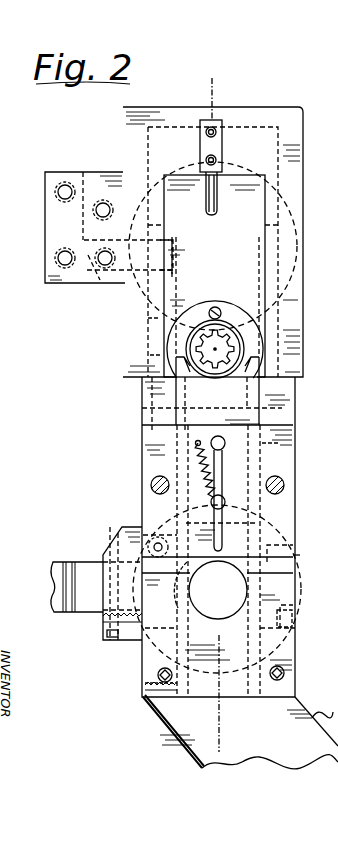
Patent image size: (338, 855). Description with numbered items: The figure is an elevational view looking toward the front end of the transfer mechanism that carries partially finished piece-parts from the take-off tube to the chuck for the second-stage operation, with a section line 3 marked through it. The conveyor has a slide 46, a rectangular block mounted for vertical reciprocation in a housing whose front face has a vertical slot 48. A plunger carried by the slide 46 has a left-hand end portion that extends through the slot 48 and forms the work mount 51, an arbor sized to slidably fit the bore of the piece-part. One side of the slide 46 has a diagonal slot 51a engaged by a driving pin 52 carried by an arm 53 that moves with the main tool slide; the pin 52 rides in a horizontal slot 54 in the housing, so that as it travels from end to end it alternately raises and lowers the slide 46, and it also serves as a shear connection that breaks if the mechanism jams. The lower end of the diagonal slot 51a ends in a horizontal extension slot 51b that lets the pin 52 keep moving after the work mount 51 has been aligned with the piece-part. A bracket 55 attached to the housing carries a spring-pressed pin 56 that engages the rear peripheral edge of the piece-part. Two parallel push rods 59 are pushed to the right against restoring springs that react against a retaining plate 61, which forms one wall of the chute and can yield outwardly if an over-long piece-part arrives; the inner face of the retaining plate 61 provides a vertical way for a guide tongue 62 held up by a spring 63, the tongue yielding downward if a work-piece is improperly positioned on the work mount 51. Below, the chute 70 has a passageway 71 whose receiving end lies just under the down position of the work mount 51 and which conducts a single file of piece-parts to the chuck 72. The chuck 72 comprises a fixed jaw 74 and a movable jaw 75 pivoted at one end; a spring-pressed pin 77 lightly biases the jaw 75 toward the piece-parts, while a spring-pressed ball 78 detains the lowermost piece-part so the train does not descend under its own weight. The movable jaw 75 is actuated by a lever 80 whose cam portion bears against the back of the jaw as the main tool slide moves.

The section line 3- 3 is at (193, 87).
The slide 46 is at (257, 257).
The vertical slot 48 is at (252, 188).
The work mount 51 is at (210, 358).
The diagonal slot 51a is at (150, 323).
The horizontal extension slot 51b is at (157, 357).
The driving pin 52 is at (173, 245).
The arm 53 is at (45, 200).
The horizontal slot 54 is at (177, 277).
The bracket 55 is at (222, 145).
The spring-pressed pin 56 is at (210, 215).
The push rods 59 is at (151, 490).
The retaining plate 61 is at (153, 516).
The guide tongue 62 is at (250, 380).
The spring 63 is at (195, 443).
The chute 70 is at (140, 463).
The passageway 71 is at (262, 443).
The chuck 72 is at (305, 556).
The fixed jaw 74 is at (280, 625).
The movable jaw 75 is at (187, 587).
The spring-pressed pin 77 is at (105, 618).
The spring-pressed ball 78 is at (145, 686).
The lever 80 is at (87, 568).